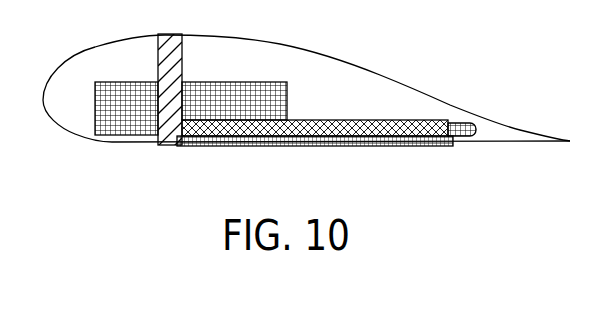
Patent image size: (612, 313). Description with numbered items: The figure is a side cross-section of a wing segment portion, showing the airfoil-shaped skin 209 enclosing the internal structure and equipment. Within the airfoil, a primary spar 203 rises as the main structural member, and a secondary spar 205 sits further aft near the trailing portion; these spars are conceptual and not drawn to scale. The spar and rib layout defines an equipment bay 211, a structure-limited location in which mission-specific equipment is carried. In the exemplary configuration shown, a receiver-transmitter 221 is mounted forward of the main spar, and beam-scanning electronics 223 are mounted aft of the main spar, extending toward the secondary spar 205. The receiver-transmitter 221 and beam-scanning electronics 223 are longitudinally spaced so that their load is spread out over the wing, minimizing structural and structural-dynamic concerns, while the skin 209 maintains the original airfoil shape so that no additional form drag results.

The primary spar 203 is at (170, 133).
The secondary spar 205 is at (458, 138).
The skin 209 is at (433, 97).
The equipment bay 211 is at (328, 75).
The receiver-transmitter 221 is at (125, 130).
The beam-scanning electronics 223 is at (268, 131).